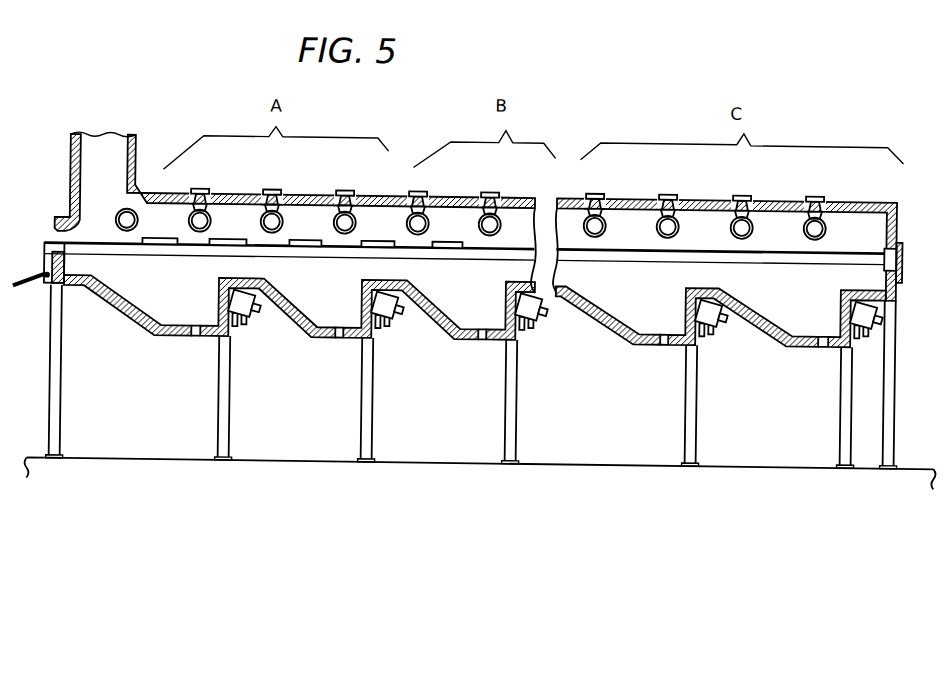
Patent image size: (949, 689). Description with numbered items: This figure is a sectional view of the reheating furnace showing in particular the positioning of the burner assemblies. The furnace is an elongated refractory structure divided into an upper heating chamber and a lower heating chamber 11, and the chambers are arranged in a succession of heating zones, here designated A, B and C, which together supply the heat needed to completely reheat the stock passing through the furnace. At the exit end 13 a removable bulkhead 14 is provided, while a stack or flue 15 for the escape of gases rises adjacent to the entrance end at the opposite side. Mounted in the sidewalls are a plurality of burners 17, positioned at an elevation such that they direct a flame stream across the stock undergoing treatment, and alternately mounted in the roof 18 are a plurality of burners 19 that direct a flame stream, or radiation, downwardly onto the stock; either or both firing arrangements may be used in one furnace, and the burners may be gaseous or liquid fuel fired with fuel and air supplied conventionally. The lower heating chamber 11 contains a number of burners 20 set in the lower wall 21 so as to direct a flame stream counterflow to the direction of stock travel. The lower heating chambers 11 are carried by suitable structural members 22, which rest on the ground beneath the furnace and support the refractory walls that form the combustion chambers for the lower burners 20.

The lower heating chamber 11 is at (655, 314).
The exit end 13 is at (924, 216).
The removable bulkhead 14 is at (904, 243).
The stack or flue 15 is at (138, 151).
The burners 17 is at (139, 219).
The roof 18 is at (316, 190).
The burners 19 is at (198, 187).
The burners 20 is at (250, 313).
The lower wall 21 is at (152, 324).
The structural members 22 is at (367, 428).